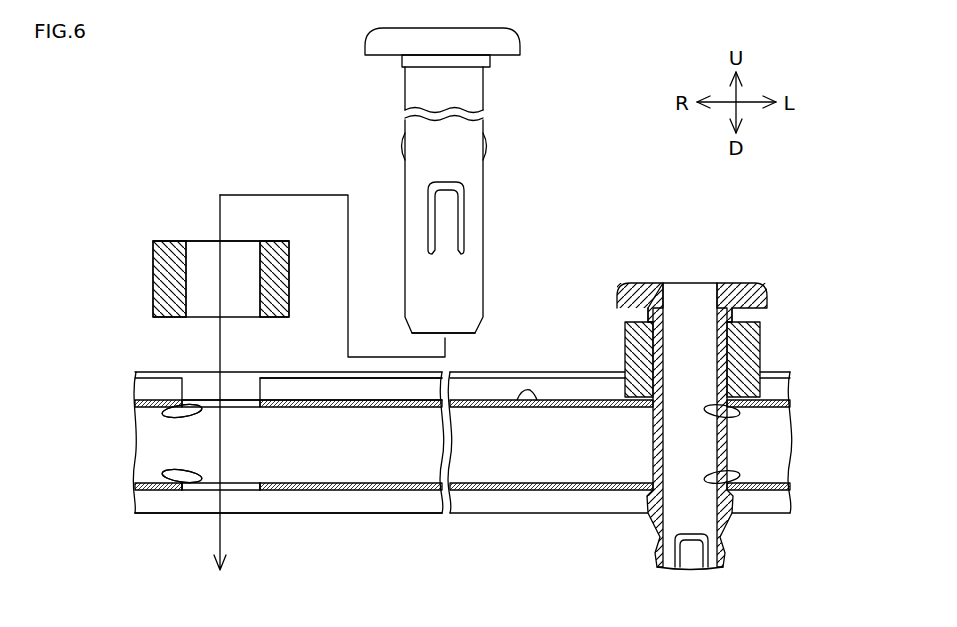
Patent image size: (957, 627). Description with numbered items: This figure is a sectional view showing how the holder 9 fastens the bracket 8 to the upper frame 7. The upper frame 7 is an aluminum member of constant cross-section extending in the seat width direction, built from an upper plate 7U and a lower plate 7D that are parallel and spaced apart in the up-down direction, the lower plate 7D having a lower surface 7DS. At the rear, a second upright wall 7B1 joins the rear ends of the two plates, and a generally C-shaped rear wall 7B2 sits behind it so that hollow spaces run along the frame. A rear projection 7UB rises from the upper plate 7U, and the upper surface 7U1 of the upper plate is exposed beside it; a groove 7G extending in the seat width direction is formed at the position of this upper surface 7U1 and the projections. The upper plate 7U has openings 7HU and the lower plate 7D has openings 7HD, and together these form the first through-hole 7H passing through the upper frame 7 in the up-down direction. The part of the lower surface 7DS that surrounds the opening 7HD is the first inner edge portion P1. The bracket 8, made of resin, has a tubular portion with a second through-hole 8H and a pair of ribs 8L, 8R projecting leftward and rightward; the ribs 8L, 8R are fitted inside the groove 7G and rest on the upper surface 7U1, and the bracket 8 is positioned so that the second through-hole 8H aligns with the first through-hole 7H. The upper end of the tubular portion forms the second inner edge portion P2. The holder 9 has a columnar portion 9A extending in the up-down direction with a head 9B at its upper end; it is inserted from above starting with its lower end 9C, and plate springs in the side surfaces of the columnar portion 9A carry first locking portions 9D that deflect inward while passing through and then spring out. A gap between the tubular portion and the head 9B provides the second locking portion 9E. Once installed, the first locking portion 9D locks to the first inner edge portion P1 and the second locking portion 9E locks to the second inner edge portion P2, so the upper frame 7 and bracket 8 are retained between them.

The upper frame 7 is at (462, 464).
The second upright wall 7B1 is at (313, 447).
The rear wall 7B2 is at (248, 387).
The upper plate 7U is at (462, 495).
The rear projection 7UB is at (382, 390).
The lower plate 7D is at (288, 490).
The lower surface 7DS is at (430, 490).
The upper surface 7U1 is at (509, 495).
The groove 7G is at (517, 400).
The first through-hole 7H is at (462, 444).
The opening 7HU is at (461, 422).
The opening 7HD is at (462, 480).
The bracket 8 is at (459, 281).
The second through-hole 8H is at (205, 265).
The rib 8R is at (165, 278).
The rib 8L is at (278, 283).
The holder 9 is at (574, 314).
The columnar portion 9A is at (455, 167).
The head 9B is at (455, 45).
The lower end 9C is at (445, 333).
The first locking portion 9D is at (402, 136).
The second locking portion 9E is at (443, 70).
The first inner edge portion P1 is at (182, 490).
The second inner edge portion P2 is at (206, 241).